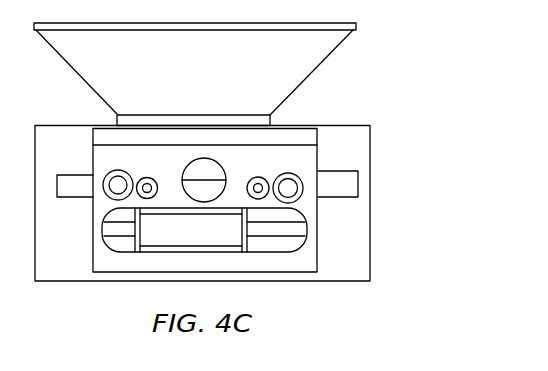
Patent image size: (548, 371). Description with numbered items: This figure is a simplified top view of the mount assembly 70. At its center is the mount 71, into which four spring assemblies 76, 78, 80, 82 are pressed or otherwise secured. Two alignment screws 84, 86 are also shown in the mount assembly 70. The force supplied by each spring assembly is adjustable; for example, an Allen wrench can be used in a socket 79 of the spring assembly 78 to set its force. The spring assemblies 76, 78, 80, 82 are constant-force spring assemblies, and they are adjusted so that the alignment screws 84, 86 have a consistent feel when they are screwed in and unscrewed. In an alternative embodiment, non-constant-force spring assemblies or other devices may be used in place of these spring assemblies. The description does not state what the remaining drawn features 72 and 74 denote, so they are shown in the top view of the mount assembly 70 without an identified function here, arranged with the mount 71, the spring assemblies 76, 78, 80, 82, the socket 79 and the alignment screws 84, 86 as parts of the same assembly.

The mount assembly 70 is at (443, 90).
The mount 71 is at (317, 243).
The central dial 72 is at (204, 180).
The tray slot 74 is at (204, 230).
The spring assembly 76 is at (339, 170).
The spring assembly 78 is at (249, 184).
The socket 79 is at (259, 186).
The spring assembly 80 is at (158, 181).
The spring assembly 82 is at (73, 198).
The alignment screw 84 is at (118, 177).
The alignment screw 86 is at (288, 178).